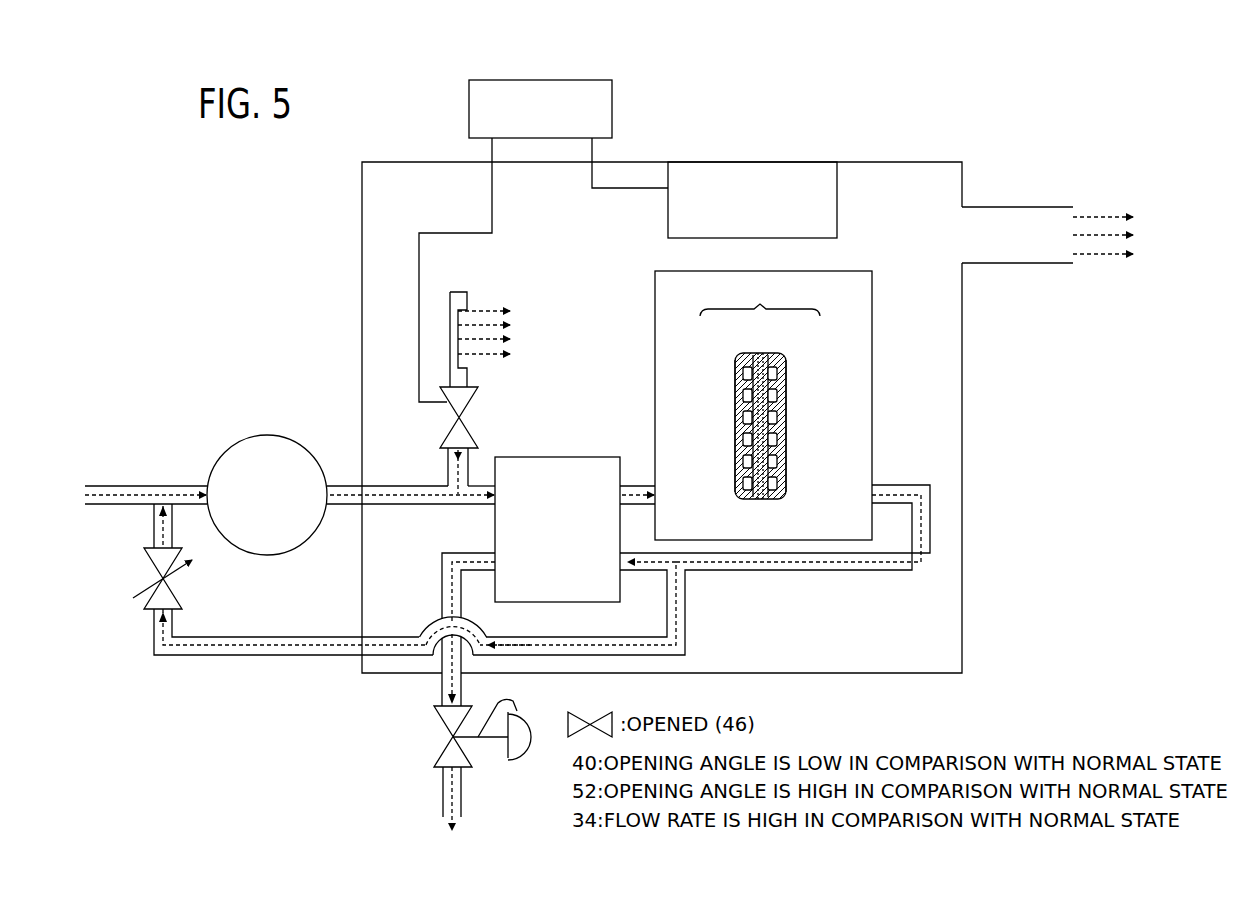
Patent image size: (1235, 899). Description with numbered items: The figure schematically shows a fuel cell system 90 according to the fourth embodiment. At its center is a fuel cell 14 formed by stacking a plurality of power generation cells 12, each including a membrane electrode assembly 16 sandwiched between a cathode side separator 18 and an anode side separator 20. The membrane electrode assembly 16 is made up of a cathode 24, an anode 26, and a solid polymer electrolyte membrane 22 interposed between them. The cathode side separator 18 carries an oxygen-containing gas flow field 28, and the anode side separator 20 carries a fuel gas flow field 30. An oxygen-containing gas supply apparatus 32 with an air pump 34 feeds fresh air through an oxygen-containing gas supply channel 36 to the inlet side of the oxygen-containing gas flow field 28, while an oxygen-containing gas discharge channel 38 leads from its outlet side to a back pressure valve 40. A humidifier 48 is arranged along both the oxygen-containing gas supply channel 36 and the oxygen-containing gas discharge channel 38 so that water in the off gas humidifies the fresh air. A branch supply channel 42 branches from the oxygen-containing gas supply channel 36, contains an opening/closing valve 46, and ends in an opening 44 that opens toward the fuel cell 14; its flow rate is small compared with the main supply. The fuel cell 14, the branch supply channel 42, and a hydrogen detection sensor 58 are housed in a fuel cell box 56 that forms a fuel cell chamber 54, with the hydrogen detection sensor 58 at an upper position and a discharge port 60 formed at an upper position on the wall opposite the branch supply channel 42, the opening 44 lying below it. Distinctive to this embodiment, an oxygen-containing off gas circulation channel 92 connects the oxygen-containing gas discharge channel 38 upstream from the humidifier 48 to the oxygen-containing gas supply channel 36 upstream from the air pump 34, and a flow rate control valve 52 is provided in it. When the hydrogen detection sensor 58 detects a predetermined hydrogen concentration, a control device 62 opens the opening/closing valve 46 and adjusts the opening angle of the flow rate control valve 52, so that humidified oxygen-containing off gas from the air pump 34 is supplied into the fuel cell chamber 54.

The power generation cell 12 is at (683, 319).
The fuel cell 14 is at (661, 268).
The membrane electrode assembly 16 is at (760, 296).
The cathode side separator 18 is at (734, 368).
The anode side separator 20 is at (787, 368).
The solid polymer electrolyte membrane 22 is at (761, 353).
The cathode 24 is at (750, 354).
The anode 26 is at (771, 354).
The oxygen-containing gas flow field 28 is at (735, 444).
The fuel gas flow field 30 is at (786, 444).
The oxygen-containing gas supply apparatus 32 is at (247, 424).
The air pump 34 is at (325, 460).
The oxygen-containing gas supply channel 36 is at (413, 483).
The oxygen-containing gas discharge channel 38 is at (718, 572).
The back pressure valve 40 is at (435, 722).
The branch supply channel 42 is at (450, 335).
The opening 44 is at (468, 306).
The opening/closing valve 46 is at (480, 428).
The humidifier 48 is at (586, 456).
The flow rate control valve 52 is at (147, 566).
The fuel cell chamber 54 is at (927, 175).
The fuel cell box 56 is at (413, 161).
The hydrogen detection sensor 58 is at (838, 178).
The discharge port 60 is at (1018, 215).
The control device 62 is at (614, 96).
The fuel cell system 90 is at (237, 169).
The oxygen-containing off gas circulation channel 92 is at (291, 657).